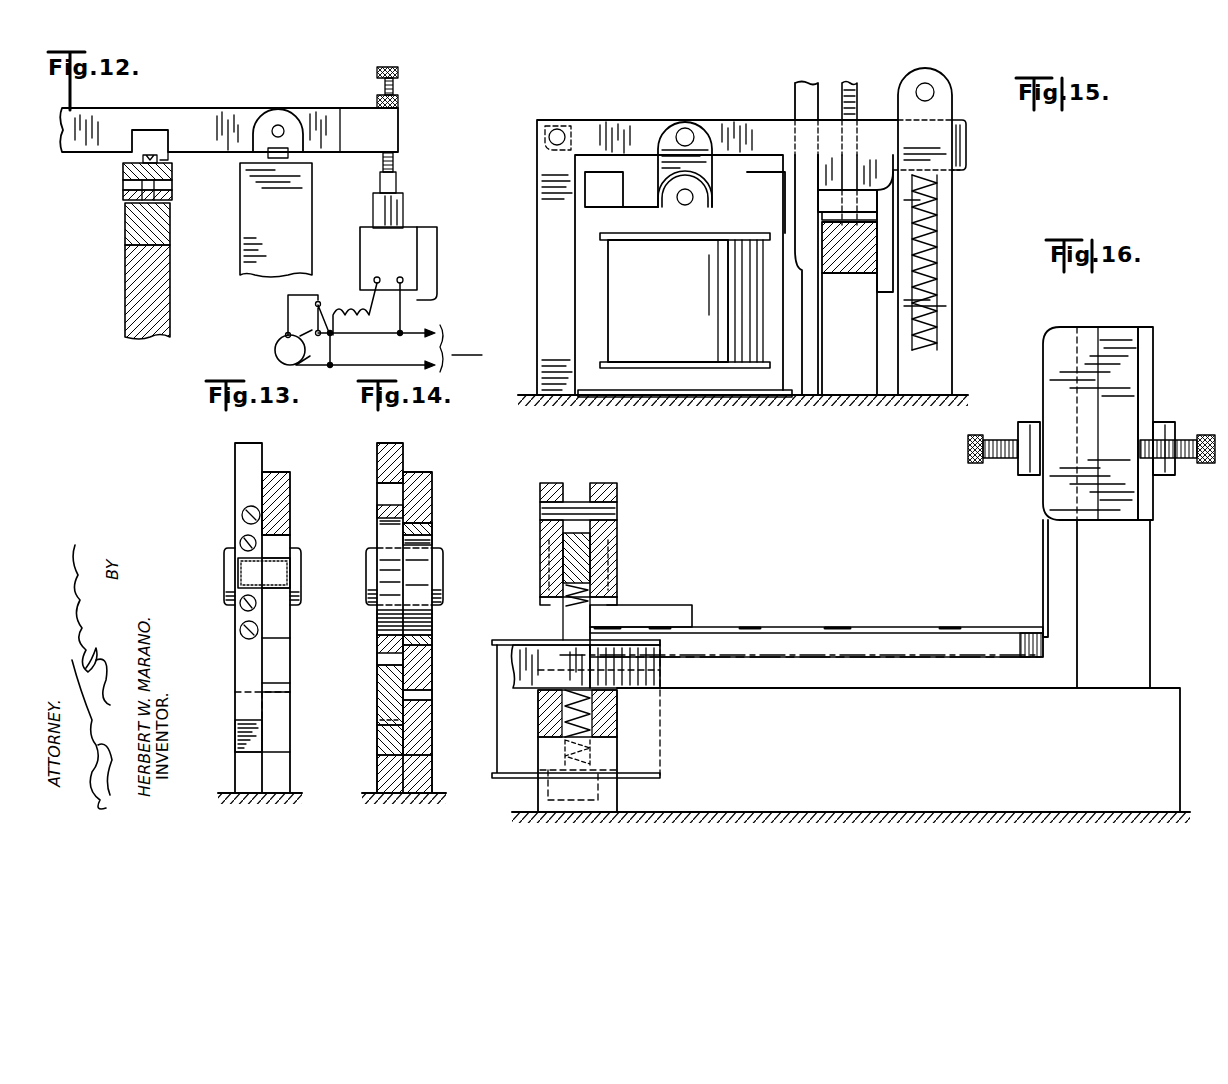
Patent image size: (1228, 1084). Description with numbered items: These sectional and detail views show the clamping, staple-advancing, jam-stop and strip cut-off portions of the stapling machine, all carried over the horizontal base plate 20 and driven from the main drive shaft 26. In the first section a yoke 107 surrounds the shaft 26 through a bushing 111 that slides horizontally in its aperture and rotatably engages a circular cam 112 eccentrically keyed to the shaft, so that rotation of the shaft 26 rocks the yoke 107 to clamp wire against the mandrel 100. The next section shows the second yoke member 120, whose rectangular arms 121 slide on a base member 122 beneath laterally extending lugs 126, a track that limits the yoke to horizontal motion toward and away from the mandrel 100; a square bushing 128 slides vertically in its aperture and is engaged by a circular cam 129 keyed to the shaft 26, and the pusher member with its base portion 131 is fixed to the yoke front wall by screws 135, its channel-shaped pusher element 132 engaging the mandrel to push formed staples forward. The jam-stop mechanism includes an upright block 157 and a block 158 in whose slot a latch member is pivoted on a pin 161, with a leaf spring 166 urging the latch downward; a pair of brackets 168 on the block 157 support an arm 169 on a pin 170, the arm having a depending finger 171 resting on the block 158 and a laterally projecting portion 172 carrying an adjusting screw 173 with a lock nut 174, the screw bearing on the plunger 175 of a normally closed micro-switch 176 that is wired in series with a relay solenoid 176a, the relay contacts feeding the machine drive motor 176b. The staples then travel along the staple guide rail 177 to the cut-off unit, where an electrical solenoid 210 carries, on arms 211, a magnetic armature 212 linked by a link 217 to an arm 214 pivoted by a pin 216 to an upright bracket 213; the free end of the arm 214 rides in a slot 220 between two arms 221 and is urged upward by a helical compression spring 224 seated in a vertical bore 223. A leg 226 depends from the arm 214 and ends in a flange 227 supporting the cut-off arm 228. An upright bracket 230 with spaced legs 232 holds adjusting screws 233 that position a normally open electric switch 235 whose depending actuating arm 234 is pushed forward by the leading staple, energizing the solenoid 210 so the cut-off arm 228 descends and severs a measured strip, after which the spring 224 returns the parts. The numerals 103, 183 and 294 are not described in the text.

In FIG. 15, the horizontal base plate 20 is at (830, 396).
In FIG. 16, the horizontal base plate 20 is at (825, 810).
In FIG. 13, the main drive shaft 26 is at (226, 598).
In FIG. 14, the main drive shaft 26 is at (366, 562).
In FIG. 12, the mandrel 100 is at (171, 228).
In FIG. 12, the lower clamp block 103 is at (171, 292).
In FIG. 13, the yoke 107 is at (284, 501).
In FIG. 14, the yoke 107 is at (428, 487).
In FIG. 14, the bushing 111 is at (432, 525).
In FIG. 14, the circular cam 112 is at (432, 541).
In FIG. 13, the second yoke member 120 is at (236, 463).
In FIG. 14, the second yoke member 120 is at (378, 463).
In FIG. 13, the arms 121 is at (238, 730).
In FIG. 13, the base member 122 is at (284, 774).
In FIG. 13, the lugs 126 is at (236, 697).
In FIG. 14, the bushing 128 is at (378, 651).
In FIG. 14, the circular cam 129 is at (378, 627).
In FIG. 13, the base portion 131 is at (236, 539).
In FIG. 13, the pusher element 132 is at (240, 574).
In FIG. 13, the screws 135 is at (240, 513).
In FIG. 12, the upright block 157 is at (284, 260).
In FIG. 12, the block 158 is at (123, 170).
In FIG. 12, the pin 161 is at (123, 184).
In FIG. 12, the leaf spring 166 is at (152, 158).
In FIG. 12, the brackets 168 is at (250, 157).
In FIG. 12, the arm 169 is at (222, 115).
In FIG. 12, the pin 170 is at (281, 128).
In FIG. 12, the depending finger 171 is at (172, 160).
In FIG. 12, the laterally projecting portion 172 is at (392, 133).
In FIG. 12, the adjusting screw 173 is at (396, 66).
In FIG. 12, the lock nut 174 is at (398, 96).
In FIG. 12, the plunger 175 is at (396, 186).
In FIG. 12, the micro-switch 176 is at (398, 265).
In FIG. 12, the relay solenoid 176a is at (348, 305).
In FIG. 12, the machine drive motor 176b is at (276, 358).
In FIG. 15, the staple guide rail 177 is at (849, 308).
In FIG. 16, the staple guide rail 177 is at (520, 644).
In FIG. 12, the lower clamp member 183 is at (160, 191).
In FIG. 15, the electrical solenoid 210 is at (690, 298).
In FIG. 16, the electrical solenoid 210 is at (497, 676).
In FIG. 15, the arms 211 is at (615, 190).
In FIG. 15, the armature 212 is at (695, 227).
In FIG. 15, the upright bracket 213 is at (548, 278).
In FIG. 15, the arm 214 is at (640, 122).
In FIG. 15, the pin 216 is at (562, 126).
In FIG. 15, the link 217 is at (712, 132).
In FIG. 16, the slot 220 is at (590, 536).
In FIG. 15, the arms 221 is at (952, 84).
In FIG. 16, the arms 221 is at (598, 483).
In FIG. 15, the vertical bore 223 is at (940, 197).
In FIG. 16, the vertical bore 223 is at (598, 714).
In FIG. 15, the helical compression spring 224 is at (950, 172).
In FIG. 16, the helical compression spring 224 is at (580, 600).
In FIG. 15, the leg 226 is at (862, 160).
In FIG. 16, the leg 226 is at (584, 558).
In FIG. 15, the flange 227 is at (818, 194).
In FIG. 16, the flange 227 is at (690, 606).
In FIG. 15, the cut-off arm 228 is at (822, 215).
In FIG. 16, the cut-off arm 228 is at (912, 613).
In FIG. 16, the upright bracket 230 is at (1124, 613).
In FIG. 16, the legs 232 is at (1022, 420).
In FIG. 16, the adjusting screws 233 is at (972, 464).
In FIG. 15, the actuating arm 234 is at (856, 80).
In FIG. 16, the electric switch 235 is at (1112, 335).
In FIG. 16, the plate 294 is at (1043, 550).